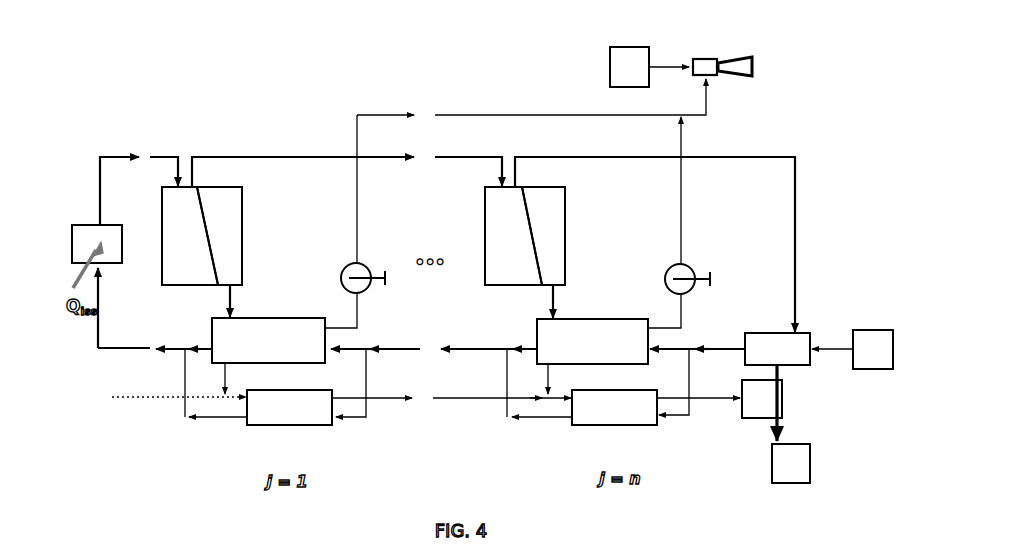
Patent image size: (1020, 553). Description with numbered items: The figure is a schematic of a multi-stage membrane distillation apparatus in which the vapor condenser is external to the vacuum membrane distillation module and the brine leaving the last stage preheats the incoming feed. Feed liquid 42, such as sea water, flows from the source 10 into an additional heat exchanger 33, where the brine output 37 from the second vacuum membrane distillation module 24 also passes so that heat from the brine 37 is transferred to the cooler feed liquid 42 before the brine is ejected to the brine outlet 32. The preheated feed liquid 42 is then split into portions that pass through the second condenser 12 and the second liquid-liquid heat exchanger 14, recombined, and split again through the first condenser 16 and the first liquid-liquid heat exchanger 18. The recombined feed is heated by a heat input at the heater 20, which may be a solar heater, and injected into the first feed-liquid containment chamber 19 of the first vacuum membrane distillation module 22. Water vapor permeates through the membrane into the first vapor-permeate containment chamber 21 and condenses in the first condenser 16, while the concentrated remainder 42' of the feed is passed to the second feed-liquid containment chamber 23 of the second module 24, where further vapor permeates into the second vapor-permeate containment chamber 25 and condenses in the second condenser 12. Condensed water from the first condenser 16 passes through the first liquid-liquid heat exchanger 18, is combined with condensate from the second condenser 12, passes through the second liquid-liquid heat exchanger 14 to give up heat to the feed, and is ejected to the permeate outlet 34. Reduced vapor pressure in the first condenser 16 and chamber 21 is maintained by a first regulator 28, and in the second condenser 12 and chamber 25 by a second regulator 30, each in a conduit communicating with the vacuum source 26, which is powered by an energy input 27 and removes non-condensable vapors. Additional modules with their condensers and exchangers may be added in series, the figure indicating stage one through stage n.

The source 10 is at (852, 349).
The second condenser 12 is at (544, 356).
The second liquid-liquid heat exchanger 14 is at (586, 387).
The first condenser 16 is at (288, 356).
The first liquid-liquid heat exchanger 18 is at (262, 387).
The first feed-liquid containment chamber 19 is at (195, 236).
The heater 20 is at (97, 232).
The first vapor-permeate containment chamber 21 is at (216, 236).
The first vacuum membrane distillation module 22 is at (156, 204).
The second feed-liquid containment chamber 23 is at (518, 236).
The second vacuum membrane distillation module 24 is at (475, 206).
The second vapor-permeate containment chamber 25 is at (541, 236).
The vacuum source 26 is at (705, 63).
The energy input 27 is at (649, 67).
The first regulator 28 is at (352, 268).
The second regulator 30 is at (667, 268).
The brine outlet 32 is at (791, 424).
The additional heat exchanger 33 is at (730, 349).
The permeate outlet 34 is at (762, 399).
The brine output 37 is at (751, 157).
The feed liquid 42 is at (143, 171).
The concentrated remainder 42' is at (347, 150).